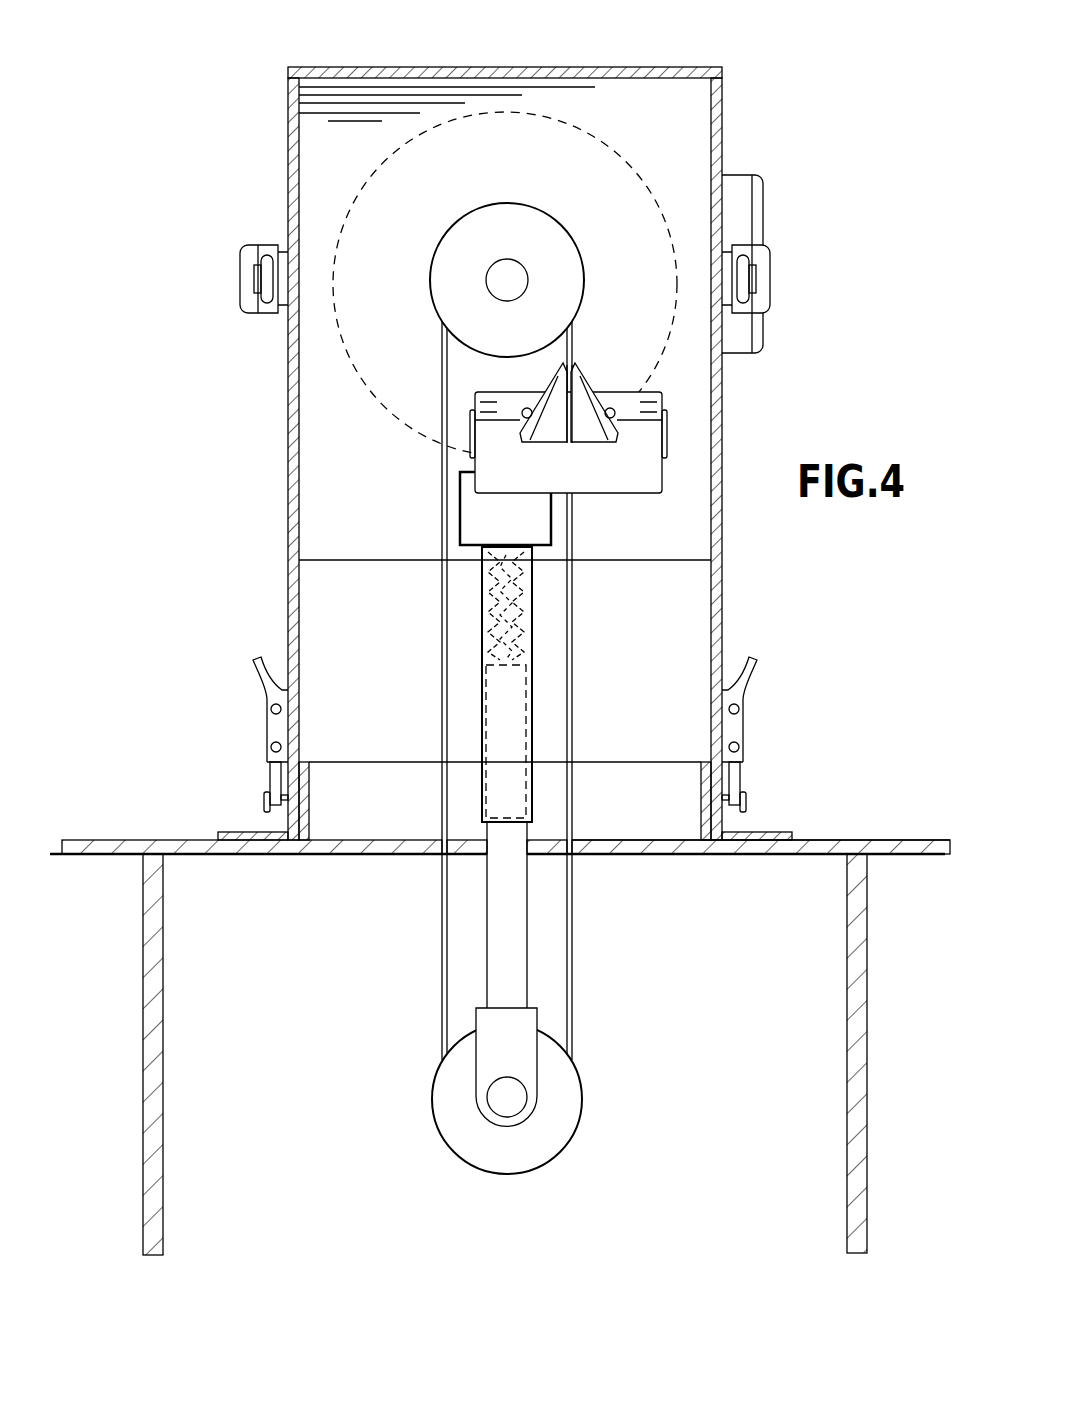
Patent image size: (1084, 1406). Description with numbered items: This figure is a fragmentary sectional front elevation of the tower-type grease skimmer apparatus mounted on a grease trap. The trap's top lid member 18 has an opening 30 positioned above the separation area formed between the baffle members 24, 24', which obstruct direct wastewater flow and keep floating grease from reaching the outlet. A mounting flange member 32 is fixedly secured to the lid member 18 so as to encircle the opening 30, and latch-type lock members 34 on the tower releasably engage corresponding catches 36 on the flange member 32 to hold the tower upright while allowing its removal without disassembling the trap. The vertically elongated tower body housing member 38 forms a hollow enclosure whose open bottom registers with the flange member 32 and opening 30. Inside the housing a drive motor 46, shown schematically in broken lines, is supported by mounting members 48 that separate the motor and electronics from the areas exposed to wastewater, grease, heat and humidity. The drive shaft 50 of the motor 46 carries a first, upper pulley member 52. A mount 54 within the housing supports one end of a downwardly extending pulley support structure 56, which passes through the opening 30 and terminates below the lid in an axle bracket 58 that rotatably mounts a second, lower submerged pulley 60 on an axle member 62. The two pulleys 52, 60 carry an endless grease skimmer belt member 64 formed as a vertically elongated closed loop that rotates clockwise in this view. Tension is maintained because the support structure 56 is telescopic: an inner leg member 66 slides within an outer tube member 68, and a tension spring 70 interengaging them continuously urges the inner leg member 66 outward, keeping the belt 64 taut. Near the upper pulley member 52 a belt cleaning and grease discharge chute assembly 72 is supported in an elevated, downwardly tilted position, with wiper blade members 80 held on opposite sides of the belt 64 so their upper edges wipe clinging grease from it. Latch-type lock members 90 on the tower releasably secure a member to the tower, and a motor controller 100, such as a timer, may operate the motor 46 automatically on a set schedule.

The top lid member 18 is at (900, 840).
The baffle member 24 is at (190, 1054).
The baffle member 24' is at (817, 1053).
The opening 30 is at (640, 848).
The mounting flange member 32 is at (310, 800).
The latch-type lock member 34 is at (268, 722).
The catch 36 is at (264, 808).
The tower body housing member 38 is at (527, 67).
The drive motor 46 is at (627, 162).
The mounting member 48 is at (320, 478).
The drive shaft 50 is at (508, 281).
The upper pulley member 52 is at (506, 204).
The mount 54 is at (460, 512).
The pulley support structure 56 is at (470, 981).
The axle bracket 58 is at (476, 1086).
The lower submerged pulley 60 is at (585, 1095).
The axle member 62 is at (520, 1106).
The grease skimmer belt member 64 is at (572, 960).
The inner leg member 66 is at (487, 938).
The outer tube member 68 is at (482, 703).
The tension spring 70 is at (482, 612).
The belt cleaning and grease discharge chute assembly 72 is at (614, 505).
The wiper blade member 80 is at (562, 368).
The latch-type lock member 90 is at (240, 278).
The motor controller 100 is at (765, 213).